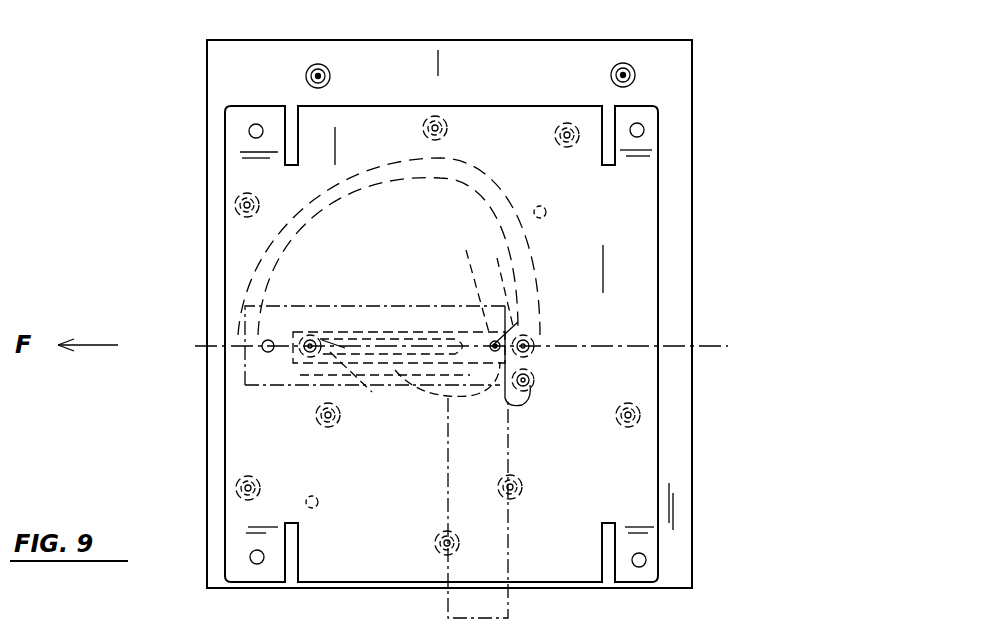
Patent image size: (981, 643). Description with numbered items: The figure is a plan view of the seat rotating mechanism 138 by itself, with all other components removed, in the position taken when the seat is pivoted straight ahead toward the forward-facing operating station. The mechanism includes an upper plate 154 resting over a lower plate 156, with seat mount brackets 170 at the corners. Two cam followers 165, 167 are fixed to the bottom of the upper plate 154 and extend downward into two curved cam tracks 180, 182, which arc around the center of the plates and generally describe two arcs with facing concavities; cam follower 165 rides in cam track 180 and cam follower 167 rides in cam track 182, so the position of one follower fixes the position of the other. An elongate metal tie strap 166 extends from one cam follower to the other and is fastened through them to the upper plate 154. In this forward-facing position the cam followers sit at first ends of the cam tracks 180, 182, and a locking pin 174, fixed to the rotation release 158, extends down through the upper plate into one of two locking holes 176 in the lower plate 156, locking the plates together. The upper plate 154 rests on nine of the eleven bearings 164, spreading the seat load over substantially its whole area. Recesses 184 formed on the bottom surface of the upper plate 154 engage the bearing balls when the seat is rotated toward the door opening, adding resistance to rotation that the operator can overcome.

The seat rotating mechanism 138 is at (720, 150).
The upper plate 154 is at (660, 228).
The lower plate 156 is at (692, 255).
The rotation release 158 is at (512, 608).
The bearings 164 is at (320, 74).
The cam follower 165 is at (535, 338).
The tie strap 166 is at (376, 324).
The cam follower 167 is at (318, 365).
The seat mount brackets 170 is at (225, 114).
The locking pin 174 is at (491, 306).
The locking holes 176 is at (262, 354).
The cam track 180 is at (388, 166).
The cam track 182 is at (404, 400).
The recesses 184 is at (548, 210).